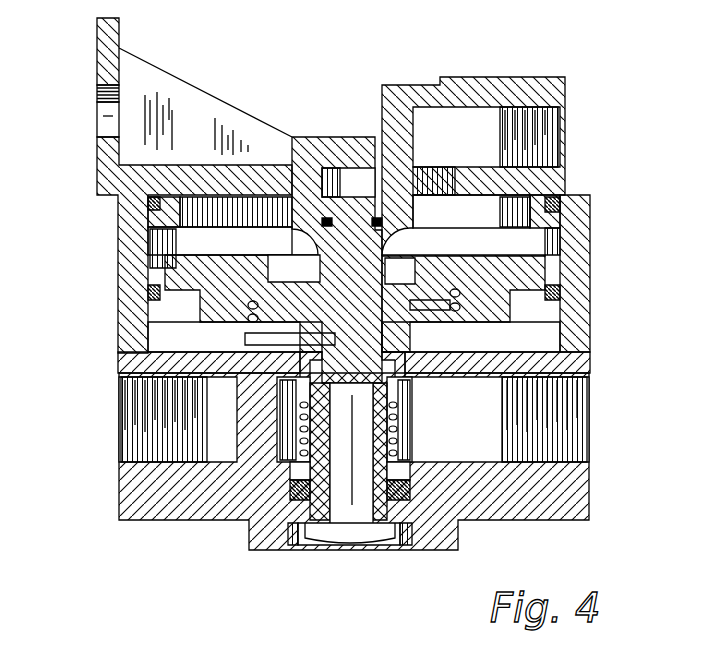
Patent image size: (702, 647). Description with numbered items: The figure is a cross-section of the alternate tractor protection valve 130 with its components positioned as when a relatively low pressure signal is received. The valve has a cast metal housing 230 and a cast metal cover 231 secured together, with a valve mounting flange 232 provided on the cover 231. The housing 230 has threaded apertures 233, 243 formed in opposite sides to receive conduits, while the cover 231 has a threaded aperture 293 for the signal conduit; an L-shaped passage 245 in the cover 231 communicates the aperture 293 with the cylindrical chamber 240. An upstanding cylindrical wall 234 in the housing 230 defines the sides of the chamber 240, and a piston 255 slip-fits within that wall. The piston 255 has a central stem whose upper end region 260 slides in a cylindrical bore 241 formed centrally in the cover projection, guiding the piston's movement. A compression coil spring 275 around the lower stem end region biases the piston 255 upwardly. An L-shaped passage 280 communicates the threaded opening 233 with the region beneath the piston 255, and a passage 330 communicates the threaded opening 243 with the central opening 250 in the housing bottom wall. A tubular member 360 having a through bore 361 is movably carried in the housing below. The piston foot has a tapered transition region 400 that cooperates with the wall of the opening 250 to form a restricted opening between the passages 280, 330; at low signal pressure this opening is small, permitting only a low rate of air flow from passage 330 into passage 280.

The tractor protection valve 130 is at (532, 64).
The valve mounting flange 232 is at (98, 63).
The cover 231 is at (312, 130).
The L-shaped passage 245 is at (470, 149).
The threaded aperture 293 is at (548, 163).
The cylindrical bore 241 is at (354, 182).
The cylindrical chamber 240 is at (243, 258).
The tapered transition region 400 is at (296, 268).
The upper stem end region 260 is at (392, 250).
The piston 255 is at (483, 255).
The central opening 250 is at (435, 252).
The upstanding cylindrical wall 234 is at (241, 327).
The compression coil spring 275 is at (425, 332).
The L-shaped passage 280 is at (225, 417).
The threaded aperture 233 is at (138, 460).
The tubular member 360 is at (408, 393).
The passage 330 is at (470, 443).
The threaded aperture 243 is at (575, 460).
The housing 230 is at (146, 524).
The through bore 361 is at (332, 530).